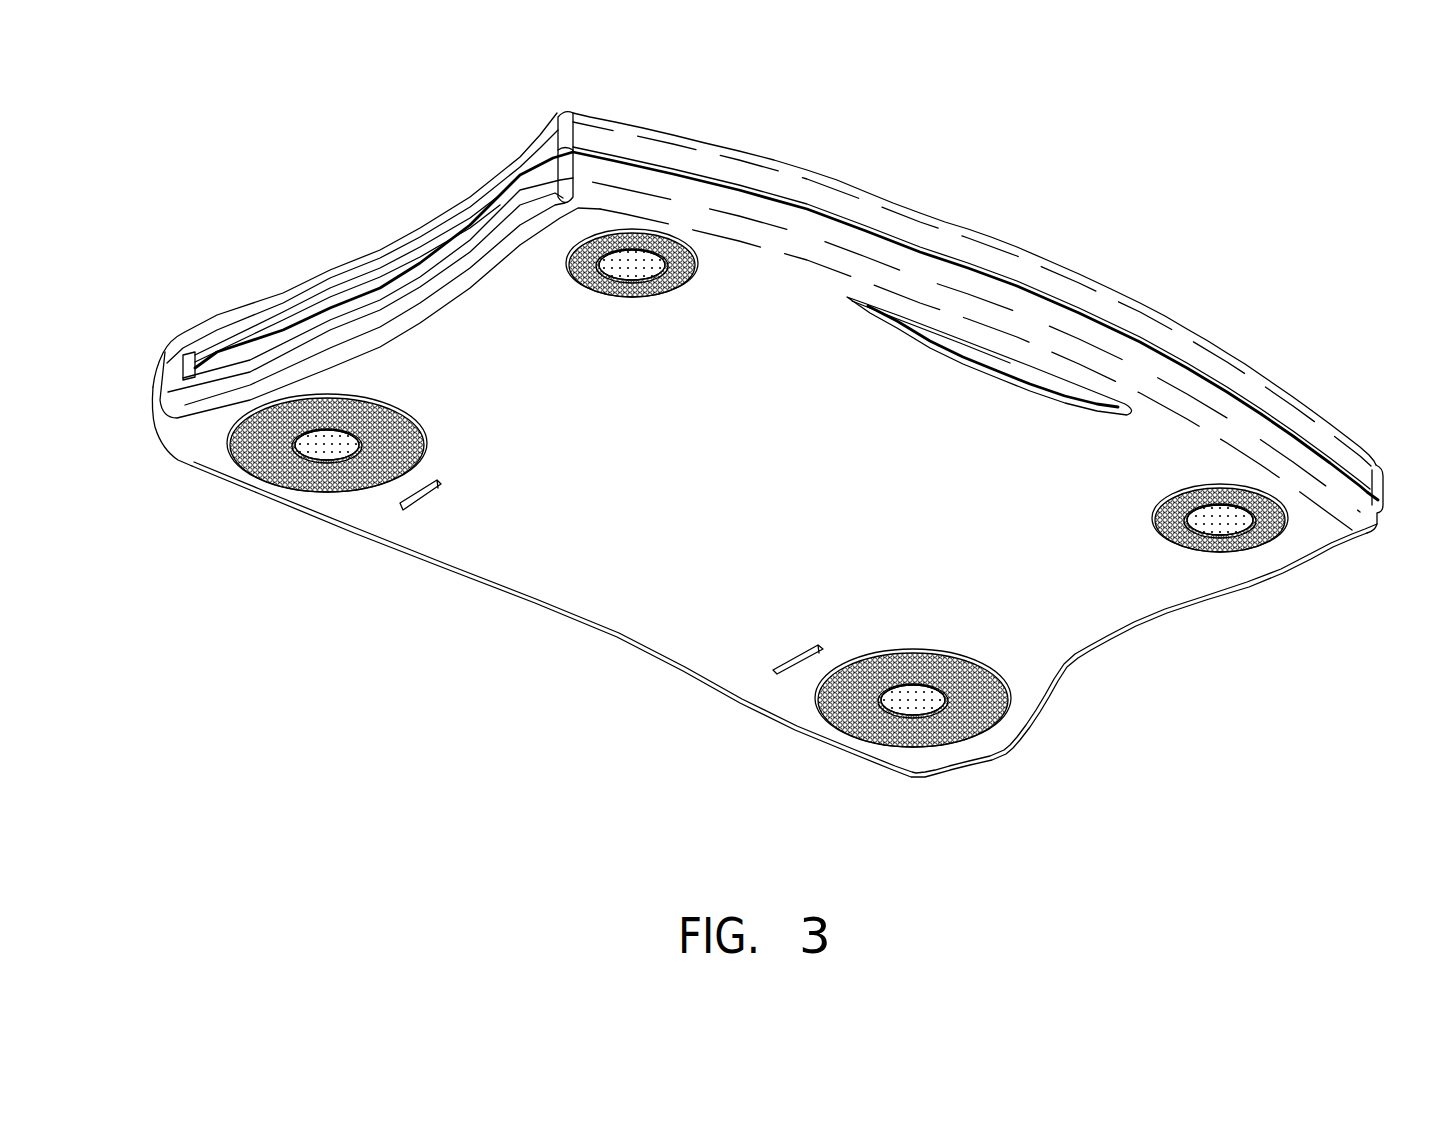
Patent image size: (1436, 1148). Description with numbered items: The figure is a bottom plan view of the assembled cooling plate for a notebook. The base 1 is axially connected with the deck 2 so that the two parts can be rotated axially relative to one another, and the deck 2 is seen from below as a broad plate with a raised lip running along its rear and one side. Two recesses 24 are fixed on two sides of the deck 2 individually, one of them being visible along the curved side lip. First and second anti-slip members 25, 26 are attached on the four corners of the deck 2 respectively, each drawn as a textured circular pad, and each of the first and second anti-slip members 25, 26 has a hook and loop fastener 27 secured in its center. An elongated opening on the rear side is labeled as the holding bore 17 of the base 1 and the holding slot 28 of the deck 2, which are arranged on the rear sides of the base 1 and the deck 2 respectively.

The base 1 is at (922, 211).
The deck 2 is at (1336, 550).
The holding bore 17 is at (1027, 514).
The holding slot 28 is at (1017, 357).
The recess 24 is at (398, 276).
The first anti-slip member 25 is at (260, 480).
The second anti-slip member 26 is at (1267, 543).
The hook and loop fastener 27 is at (327, 450).